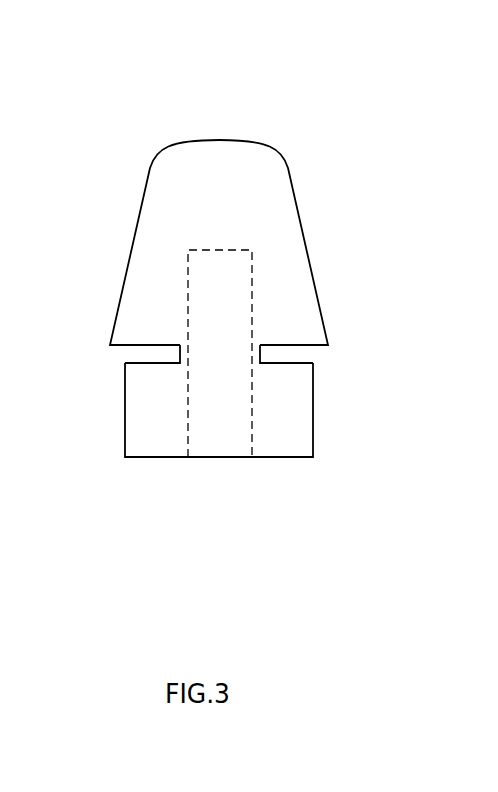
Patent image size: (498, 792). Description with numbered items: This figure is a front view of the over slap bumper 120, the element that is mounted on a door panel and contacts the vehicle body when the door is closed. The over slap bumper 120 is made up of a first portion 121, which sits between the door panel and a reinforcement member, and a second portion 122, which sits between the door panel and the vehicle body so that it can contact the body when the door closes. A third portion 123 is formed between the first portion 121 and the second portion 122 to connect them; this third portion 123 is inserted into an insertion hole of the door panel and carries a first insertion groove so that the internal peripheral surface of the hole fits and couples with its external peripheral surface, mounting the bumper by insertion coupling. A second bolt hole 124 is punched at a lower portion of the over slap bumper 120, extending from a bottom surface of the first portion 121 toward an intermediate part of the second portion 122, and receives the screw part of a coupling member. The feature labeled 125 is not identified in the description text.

The over slap bumper 120 is at (83, 60).
The first portion 121 is at (302, 410).
The second portion 122 is at (283, 203).
The third portion 123 is at (183, 355).
The second bolt hole 124 is at (218, 443).
The notch / step 125 is at (162, 348).